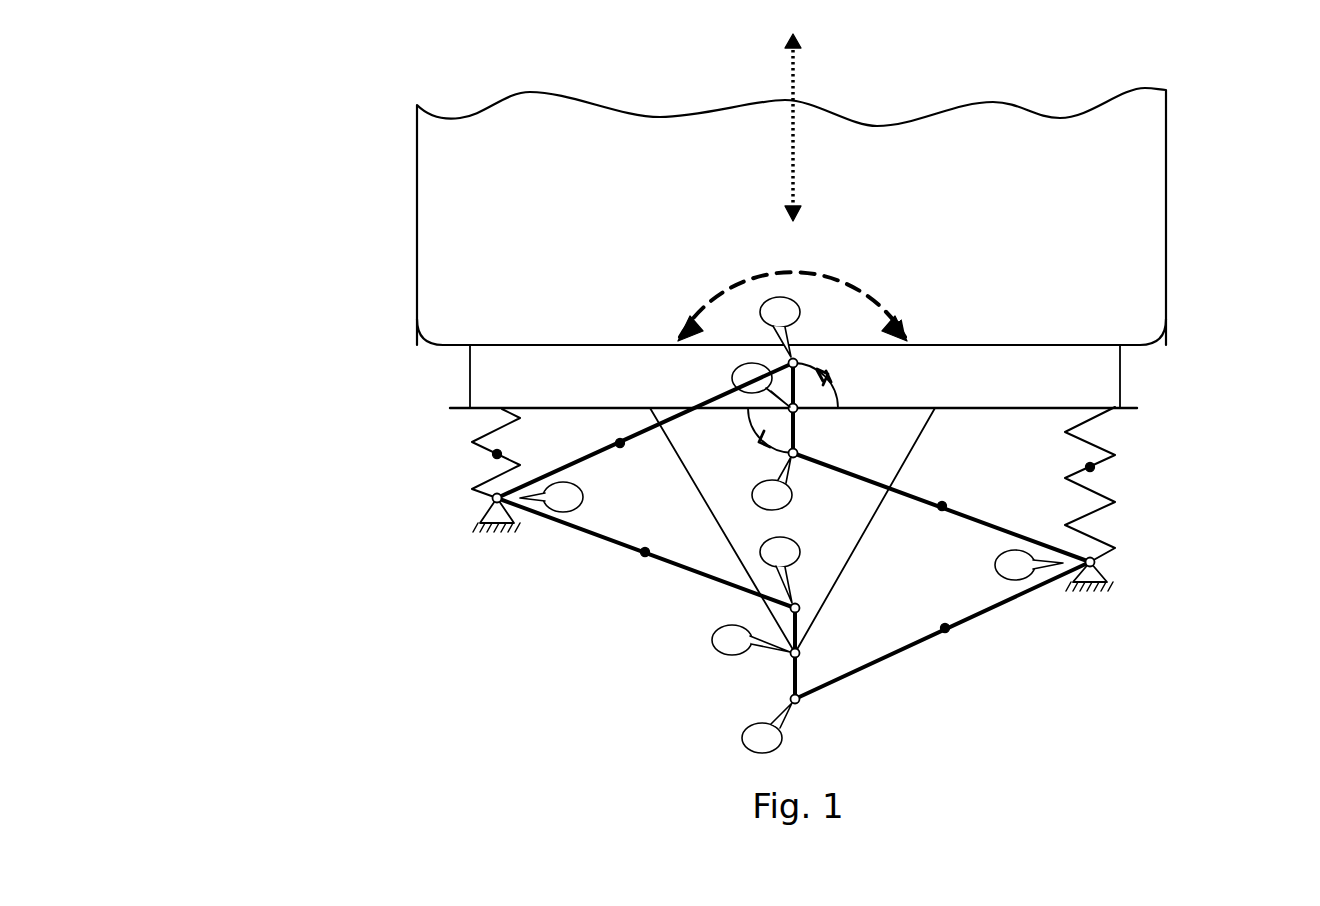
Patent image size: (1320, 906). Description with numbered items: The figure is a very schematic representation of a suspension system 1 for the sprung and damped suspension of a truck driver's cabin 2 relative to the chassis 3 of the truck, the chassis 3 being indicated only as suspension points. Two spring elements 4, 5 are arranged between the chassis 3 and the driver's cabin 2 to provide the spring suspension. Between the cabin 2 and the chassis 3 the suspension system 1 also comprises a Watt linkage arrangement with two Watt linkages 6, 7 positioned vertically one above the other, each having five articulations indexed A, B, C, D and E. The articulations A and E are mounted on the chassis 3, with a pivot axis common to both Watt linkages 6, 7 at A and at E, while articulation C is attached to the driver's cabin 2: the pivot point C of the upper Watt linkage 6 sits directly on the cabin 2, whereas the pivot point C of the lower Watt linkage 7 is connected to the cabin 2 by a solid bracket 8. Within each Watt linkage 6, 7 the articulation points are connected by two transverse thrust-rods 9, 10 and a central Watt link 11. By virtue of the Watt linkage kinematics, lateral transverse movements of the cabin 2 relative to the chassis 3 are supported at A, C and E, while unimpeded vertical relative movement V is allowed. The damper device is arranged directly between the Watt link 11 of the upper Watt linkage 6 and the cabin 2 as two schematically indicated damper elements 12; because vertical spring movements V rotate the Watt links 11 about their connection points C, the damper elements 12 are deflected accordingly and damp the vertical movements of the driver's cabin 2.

The suspension system 1 is at (325, 594).
The driver's cabin 2 is at (1098, 181).
The chassis 3 is at (458, 510).
The spring element 4 is at (497, 454).
The spring element 5 is at (1090, 467).
The upper Watt linkage 6 is at (612, 375).
The lower Watt linkage 7 is at (665, 695).
The bracket 8 is at (829, 533).
The transverse thrust-rod 9 is at (620, 443).
The transverse thrust-rod 10 is at (942, 506).
The central Watt link 11 is at (808, 428).
The damper element 12 is at (842, 362).